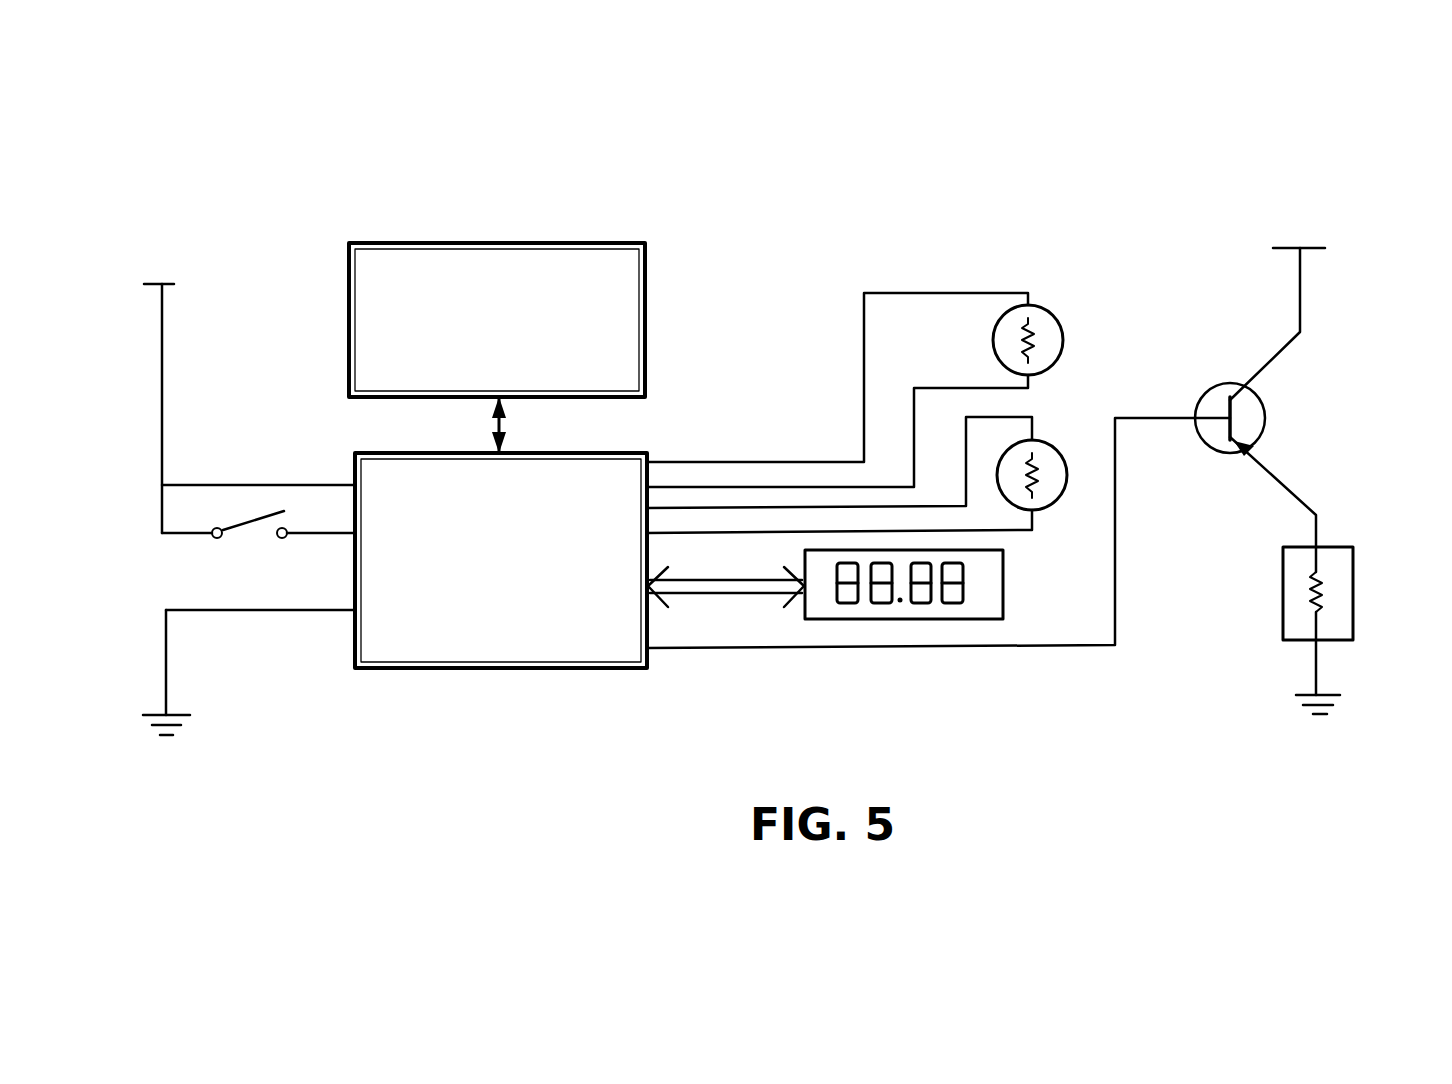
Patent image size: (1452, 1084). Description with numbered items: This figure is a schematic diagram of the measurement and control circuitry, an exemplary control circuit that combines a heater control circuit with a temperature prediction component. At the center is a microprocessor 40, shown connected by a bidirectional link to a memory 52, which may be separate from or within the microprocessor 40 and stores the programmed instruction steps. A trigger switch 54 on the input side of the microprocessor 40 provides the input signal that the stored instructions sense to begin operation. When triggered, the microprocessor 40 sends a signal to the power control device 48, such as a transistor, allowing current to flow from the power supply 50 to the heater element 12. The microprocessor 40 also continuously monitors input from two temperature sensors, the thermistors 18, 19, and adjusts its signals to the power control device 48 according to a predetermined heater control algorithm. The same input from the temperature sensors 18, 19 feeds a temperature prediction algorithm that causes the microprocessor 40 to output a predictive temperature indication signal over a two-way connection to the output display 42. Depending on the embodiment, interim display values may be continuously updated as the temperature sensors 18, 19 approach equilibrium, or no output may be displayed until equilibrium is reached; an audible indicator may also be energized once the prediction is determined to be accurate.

The heater element 12 is at (1353, 558).
The temperature sensor 18 is at (1040, 322).
The temperature sensor 19 is at (1042, 438).
The microprocessor 40 is at (497, 668).
The output display 42 is at (1003, 585).
The power control device 48 is at (1257, 390).
The power supply 50 is at (1313, 248).
The memory 52 is at (558, 243).
The trigger switch 54 is at (254, 538).